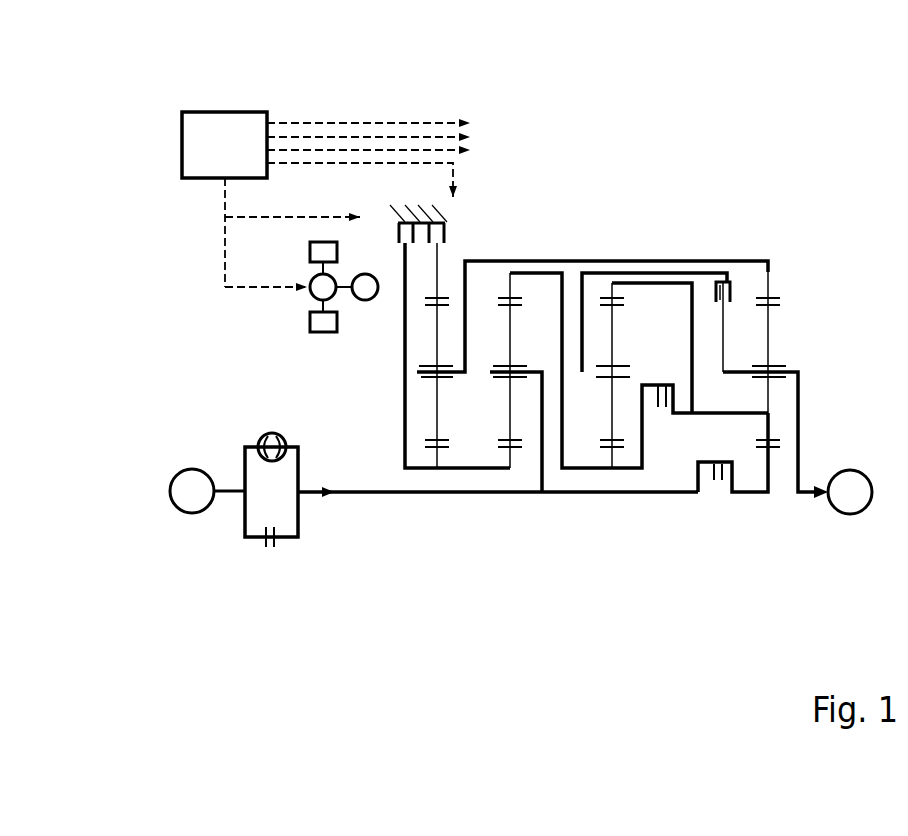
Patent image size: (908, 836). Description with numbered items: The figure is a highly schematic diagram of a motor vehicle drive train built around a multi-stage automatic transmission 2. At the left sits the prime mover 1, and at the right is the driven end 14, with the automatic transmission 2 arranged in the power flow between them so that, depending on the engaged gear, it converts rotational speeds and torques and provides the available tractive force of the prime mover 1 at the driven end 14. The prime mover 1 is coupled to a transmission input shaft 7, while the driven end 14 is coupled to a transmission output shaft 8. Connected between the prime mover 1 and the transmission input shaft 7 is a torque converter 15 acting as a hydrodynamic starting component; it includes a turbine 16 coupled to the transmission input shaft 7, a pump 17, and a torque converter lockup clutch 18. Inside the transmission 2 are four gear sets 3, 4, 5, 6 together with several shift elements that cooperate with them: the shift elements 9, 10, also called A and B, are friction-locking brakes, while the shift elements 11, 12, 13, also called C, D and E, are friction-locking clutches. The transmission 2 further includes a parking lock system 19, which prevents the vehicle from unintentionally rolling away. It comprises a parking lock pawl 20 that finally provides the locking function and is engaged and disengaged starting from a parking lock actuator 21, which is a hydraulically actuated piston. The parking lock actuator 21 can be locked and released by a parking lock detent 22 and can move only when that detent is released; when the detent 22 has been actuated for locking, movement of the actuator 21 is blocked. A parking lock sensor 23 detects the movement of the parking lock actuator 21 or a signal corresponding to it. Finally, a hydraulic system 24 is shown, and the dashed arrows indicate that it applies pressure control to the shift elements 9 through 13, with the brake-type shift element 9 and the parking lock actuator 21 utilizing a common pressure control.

The prime mover 1 is at (175, 508).
The automatic transmission 2 is at (608, 207).
The gear set 3 is at (437, 510).
The gear set 4 is at (510, 510).
The gear set 5 is at (612, 510).
The gear set 6 is at (768, 510).
The transmission input shaft 7 is at (307, 494).
The transmission output shaft 8 is at (802, 435).
The shift element A 9 is at (447, 458).
The shift element B 10 is at (461, 135).
The shift element C 11 is at (712, 496).
The shift element D 12 is at (731, 279).
The shift element E 13 is at (666, 380).
The driven end 14 is at (838, 515).
The torque converter 15 is at (270, 472).
The turbine 16 is at (287, 433).
The pump 17 is at (256, 440).
The torque converter lockup clutch 18 is at (270, 560).
The parking lock system 19 is at (189, 300).
The parking lock pawl 20 is at (362, 298).
The parking lock actuator 21 is at (310, 282).
The parking lock detent 22 is at (308, 325).
The parking lock sensor 23 is at (308, 252).
The hydraulic system 24 is at (200, 140).